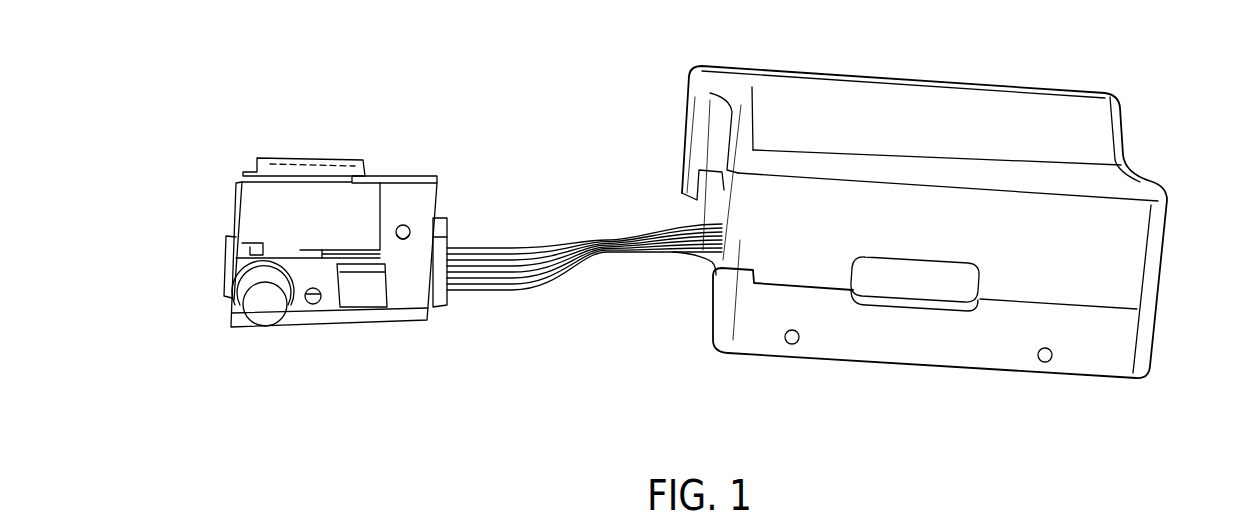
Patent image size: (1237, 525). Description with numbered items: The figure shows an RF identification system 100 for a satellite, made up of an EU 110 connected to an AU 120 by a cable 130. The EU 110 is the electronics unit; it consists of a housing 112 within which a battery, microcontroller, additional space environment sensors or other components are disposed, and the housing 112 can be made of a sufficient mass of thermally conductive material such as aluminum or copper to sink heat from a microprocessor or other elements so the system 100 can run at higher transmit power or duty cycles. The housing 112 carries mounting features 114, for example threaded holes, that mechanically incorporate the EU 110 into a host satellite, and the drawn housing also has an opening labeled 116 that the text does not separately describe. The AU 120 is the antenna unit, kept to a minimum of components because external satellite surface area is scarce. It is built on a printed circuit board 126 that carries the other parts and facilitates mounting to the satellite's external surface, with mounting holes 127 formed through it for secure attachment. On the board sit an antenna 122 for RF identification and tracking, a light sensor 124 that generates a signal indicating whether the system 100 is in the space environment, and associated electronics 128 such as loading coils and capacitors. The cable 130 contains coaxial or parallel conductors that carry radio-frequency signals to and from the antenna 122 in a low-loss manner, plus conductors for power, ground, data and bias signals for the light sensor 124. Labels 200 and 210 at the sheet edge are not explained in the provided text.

The RF identification system 100 is at (106, 144).
The EU 110 is at (1184, 165).
The housing 112 is at (1123, 380).
The mounting features 114 is at (794, 345).
The slot 116 is at (897, 285).
The AU 120 is at (411, 161).
The antenna 122 is at (298, 233).
The light sensor 124 is at (270, 318).
The printed circuit board 126 is at (416, 313).
The mounting holes 127 is at (409, 226).
The associated electronics 128 is at (370, 297).
The cable 130 is at (581, 231).
The second assembly 200 is at (58, 524).
The second housing 210 is at (958, 524).